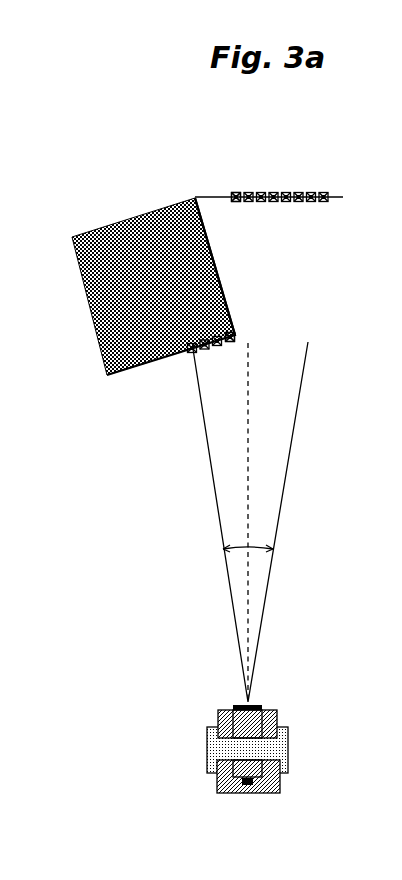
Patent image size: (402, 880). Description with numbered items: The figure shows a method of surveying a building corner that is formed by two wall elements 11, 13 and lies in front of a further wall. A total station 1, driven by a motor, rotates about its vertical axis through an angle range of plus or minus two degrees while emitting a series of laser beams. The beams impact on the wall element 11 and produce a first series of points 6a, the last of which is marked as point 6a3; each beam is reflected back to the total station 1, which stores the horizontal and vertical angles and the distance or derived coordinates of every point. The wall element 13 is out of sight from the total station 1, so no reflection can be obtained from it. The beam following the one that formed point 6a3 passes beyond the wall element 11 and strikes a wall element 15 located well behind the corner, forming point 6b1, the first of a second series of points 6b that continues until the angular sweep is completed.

The total station 1 is at (283, 735).
The wall element 11 is at (117, 375).
The wall element 13 is at (195, 198).
The wall element 15 is at (340, 194).
The first series of points 6a is at (195, 348).
The point mark 6a3 is at (235, 333).
The second series of points 6b is at (250, 193).
The point 6b1 is at (237, 202).